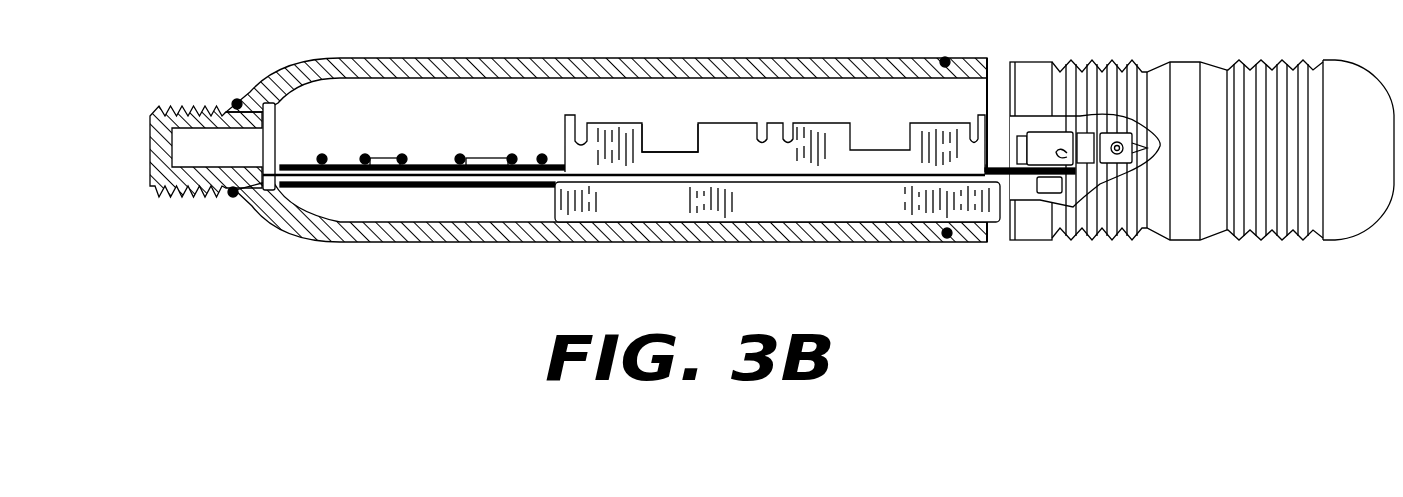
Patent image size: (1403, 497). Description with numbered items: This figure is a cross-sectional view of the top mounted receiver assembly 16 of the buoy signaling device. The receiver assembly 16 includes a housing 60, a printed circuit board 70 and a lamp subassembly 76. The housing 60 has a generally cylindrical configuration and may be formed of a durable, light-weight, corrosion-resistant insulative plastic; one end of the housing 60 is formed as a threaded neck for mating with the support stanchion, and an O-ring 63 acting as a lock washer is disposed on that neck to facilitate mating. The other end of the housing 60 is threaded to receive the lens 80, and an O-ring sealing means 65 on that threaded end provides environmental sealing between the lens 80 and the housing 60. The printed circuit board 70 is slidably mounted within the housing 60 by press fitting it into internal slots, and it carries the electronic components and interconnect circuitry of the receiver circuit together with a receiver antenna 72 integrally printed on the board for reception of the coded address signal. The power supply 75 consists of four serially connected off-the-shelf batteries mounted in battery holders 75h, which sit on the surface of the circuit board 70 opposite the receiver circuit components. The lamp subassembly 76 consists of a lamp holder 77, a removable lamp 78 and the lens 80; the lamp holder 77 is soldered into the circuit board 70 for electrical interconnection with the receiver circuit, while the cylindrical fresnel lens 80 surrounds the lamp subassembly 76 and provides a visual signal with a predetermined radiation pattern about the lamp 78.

The receiver assembly 16 is at (667, 259).
The housing 60 is at (472, 246).
The O-ring 63 is at (235, 97).
The O-ring sealing means 65 is at (948, 244).
The printed circuit board 70 is at (300, 173).
The receiver antenna 72 is at (472, 150).
The power supply 75 is at (887, 134).
The battery holders 75h is at (707, 128).
The lamp subassembly 76 is at (1171, 46).
The lamp holder 77 is at (1044, 145).
The lamp 78 is at (1114, 158).
The lens 80 is at (1316, 56).